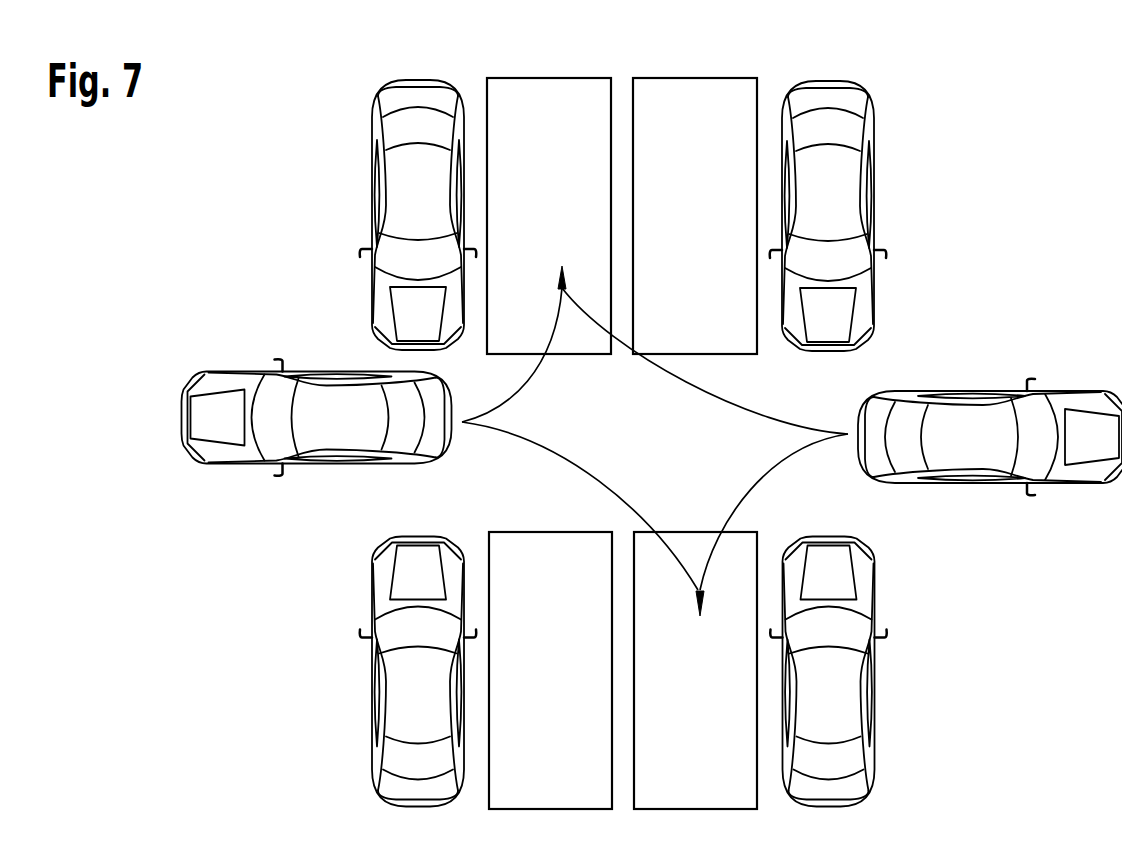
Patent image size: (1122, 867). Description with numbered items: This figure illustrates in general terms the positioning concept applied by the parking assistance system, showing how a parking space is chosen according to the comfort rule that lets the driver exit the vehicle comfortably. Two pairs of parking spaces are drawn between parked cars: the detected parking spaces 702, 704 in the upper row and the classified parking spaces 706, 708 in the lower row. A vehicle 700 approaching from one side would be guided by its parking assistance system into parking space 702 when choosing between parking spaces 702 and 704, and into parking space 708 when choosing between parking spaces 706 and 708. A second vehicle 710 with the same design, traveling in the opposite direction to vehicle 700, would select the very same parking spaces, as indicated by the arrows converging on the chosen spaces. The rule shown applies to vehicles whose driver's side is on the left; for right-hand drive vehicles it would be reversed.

The vehicle 700 is at (232, 370).
The parking space 702 is at (551, 77).
The parking space 704 is at (701, 77).
The parking space 706 is at (551, 531).
The parking space 708 is at (698, 531).
The vehicle 710 is at (1088, 390).